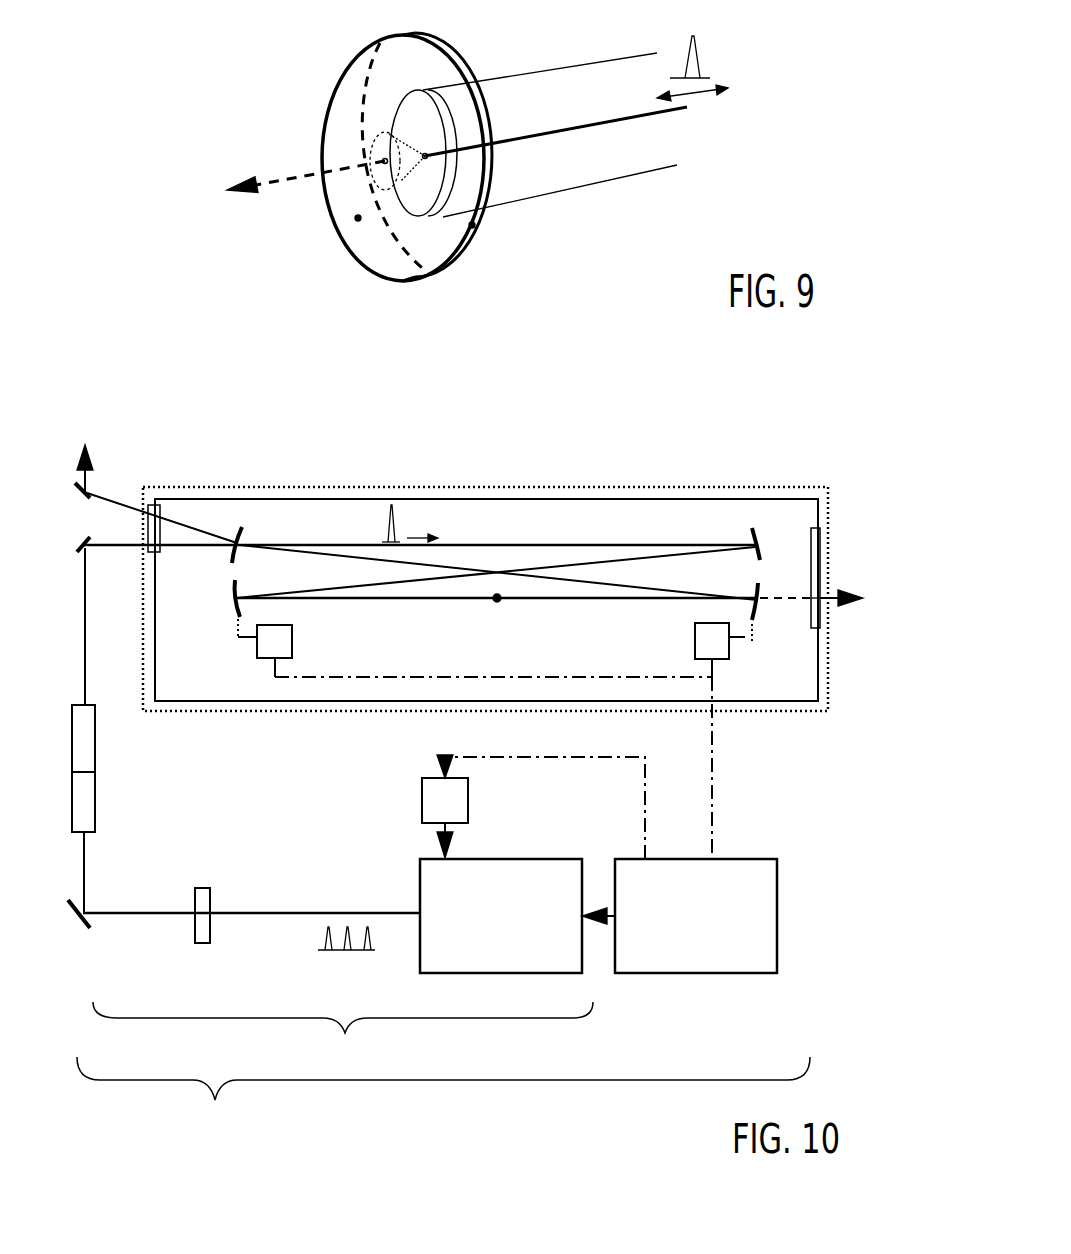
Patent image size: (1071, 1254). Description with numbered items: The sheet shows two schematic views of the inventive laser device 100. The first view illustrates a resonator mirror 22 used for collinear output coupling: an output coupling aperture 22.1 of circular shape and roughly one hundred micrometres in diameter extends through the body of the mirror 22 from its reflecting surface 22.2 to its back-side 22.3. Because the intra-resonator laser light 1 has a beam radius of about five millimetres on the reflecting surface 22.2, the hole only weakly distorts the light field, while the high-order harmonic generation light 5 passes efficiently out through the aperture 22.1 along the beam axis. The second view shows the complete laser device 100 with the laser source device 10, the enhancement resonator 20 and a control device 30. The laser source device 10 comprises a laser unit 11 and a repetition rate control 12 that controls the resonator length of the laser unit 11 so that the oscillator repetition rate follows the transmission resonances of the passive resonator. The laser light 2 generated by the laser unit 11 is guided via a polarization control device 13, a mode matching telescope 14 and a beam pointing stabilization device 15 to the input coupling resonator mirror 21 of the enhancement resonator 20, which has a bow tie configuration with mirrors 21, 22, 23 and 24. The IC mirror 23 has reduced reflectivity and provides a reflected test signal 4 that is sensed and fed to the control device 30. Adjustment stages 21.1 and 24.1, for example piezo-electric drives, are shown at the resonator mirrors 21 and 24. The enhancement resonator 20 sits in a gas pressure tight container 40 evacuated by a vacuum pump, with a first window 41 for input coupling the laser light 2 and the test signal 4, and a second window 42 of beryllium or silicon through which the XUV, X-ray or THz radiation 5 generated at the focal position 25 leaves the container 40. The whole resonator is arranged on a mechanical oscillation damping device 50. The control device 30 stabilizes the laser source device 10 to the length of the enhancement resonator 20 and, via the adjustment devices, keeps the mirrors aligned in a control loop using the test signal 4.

In FIG. 9, the intra-resonator laser light 1 is at (575, 117).
In FIG. 10, the laser light 2 is at (345, 953).
In FIG. 10, the test signal 4 is at (90, 487).
In FIG. 9, the high-order harmonic generation light 5 is at (283, 184).
In FIG. 10, the laser source device 10 is at (358, 1065).
In FIG. 10, the laser unit 11 is at (430, 888).
In FIG. 10, the repetition rate control 12 is at (430, 790).
In FIG. 10, the polarization control device 13 is at (205, 927).
In FIG. 10, the mode matching telescope 14 is at (85, 822).
In FIG. 10, the beam pointing stabilization device 15 is at (83, 760).
In FIG. 10, the enhancement resonator 20 is at (515, 638).
In FIG. 10, the input coupling resonator mirror 21 is at (238, 608).
In FIG. 10, the adjustment stage 21.1 is at (275, 642).
In FIG. 9, the resonator mirror 22 is at (373, 243).
In FIG. 10, the resonator mirror 22 is at (757, 535).
In FIG. 9, the output coupling aperture 22.1 is at (365, 160).
In FIG. 9, the reflecting surface 22.2 is at (472, 225).
In FIG. 9, the back-side 22.3 is at (358, 218).
In FIG. 10, the IC mirror 23 is at (237, 533).
In FIG. 10, the resonator mirror 24 is at (758, 608).
In FIG. 10, the adjustment stage 24.1 is at (713, 645).
In FIG. 10, the focal position 25 is at (500, 598).
In FIG. 10, the control device 30 is at (760, 930).
In FIG. 10, the gas pressure tight container 40 is at (527, 499).
In FIG. 10, the first window 41 is at (152, 537).
In FIG. 10, the second window 42 is at (820, 623).
In FIG. 10, the mechanical oscillation damping device 50 is at (403, 487).
In FIG. 10, the laser device 100 is at (233, 1137).